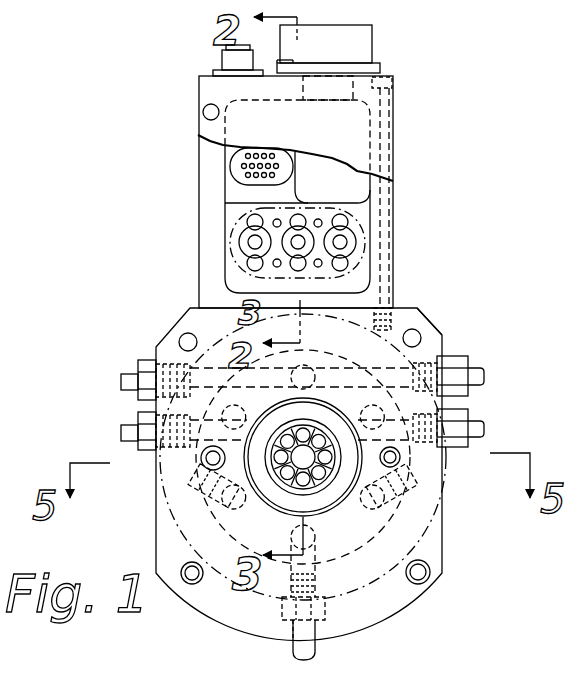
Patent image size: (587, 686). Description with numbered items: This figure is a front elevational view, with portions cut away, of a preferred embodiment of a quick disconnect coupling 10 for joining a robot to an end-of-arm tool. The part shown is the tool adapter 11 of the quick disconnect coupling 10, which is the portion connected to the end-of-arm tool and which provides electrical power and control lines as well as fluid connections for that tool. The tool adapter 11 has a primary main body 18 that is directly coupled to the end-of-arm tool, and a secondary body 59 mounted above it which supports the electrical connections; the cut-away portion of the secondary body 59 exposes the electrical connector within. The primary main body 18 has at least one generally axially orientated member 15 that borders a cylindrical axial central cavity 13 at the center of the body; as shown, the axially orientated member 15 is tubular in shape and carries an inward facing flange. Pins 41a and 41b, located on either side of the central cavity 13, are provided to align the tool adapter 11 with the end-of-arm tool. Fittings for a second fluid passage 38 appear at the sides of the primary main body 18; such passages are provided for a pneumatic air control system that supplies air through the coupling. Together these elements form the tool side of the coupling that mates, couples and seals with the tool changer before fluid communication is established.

The quick disconnect coupling 10 is at (160, 316).
The tool adapter 11 is at (406, 314).
The cylindrical axial central cavity 13 is at (326, 413).
The axially orientated member 15 is at (288, 504).
The primary main body 18 is at (428, 343).
The second fluid passage 38 is at (120, 432).
The alignment pin 41a is at (398, 463).
The alignment pin 41b is at (205, 468).
The secondary body 59 is at (198, 135).